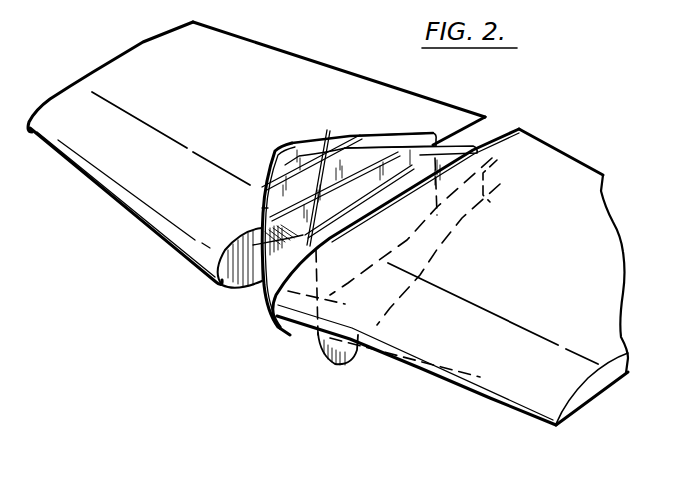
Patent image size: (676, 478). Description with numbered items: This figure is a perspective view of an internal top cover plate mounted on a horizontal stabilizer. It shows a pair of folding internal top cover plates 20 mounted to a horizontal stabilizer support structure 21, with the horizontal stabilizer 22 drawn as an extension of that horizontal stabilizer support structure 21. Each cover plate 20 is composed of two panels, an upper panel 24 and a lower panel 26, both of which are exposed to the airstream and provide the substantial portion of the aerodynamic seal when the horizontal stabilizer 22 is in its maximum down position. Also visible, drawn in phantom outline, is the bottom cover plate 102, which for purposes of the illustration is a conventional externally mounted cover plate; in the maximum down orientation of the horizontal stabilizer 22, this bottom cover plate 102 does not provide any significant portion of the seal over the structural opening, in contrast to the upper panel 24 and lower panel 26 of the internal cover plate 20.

The folding internal top cover plate 20 is at (404, 146).
The horizontal stabilizer support structure 21 is at (272, 272).
The horizontal stabilizer 22 is at (118, 198).
The upper panel 24 is at (331, 137).
The lower panel 26 is at (262, 209).
The bottom cover plate 102 is at (322, 370).